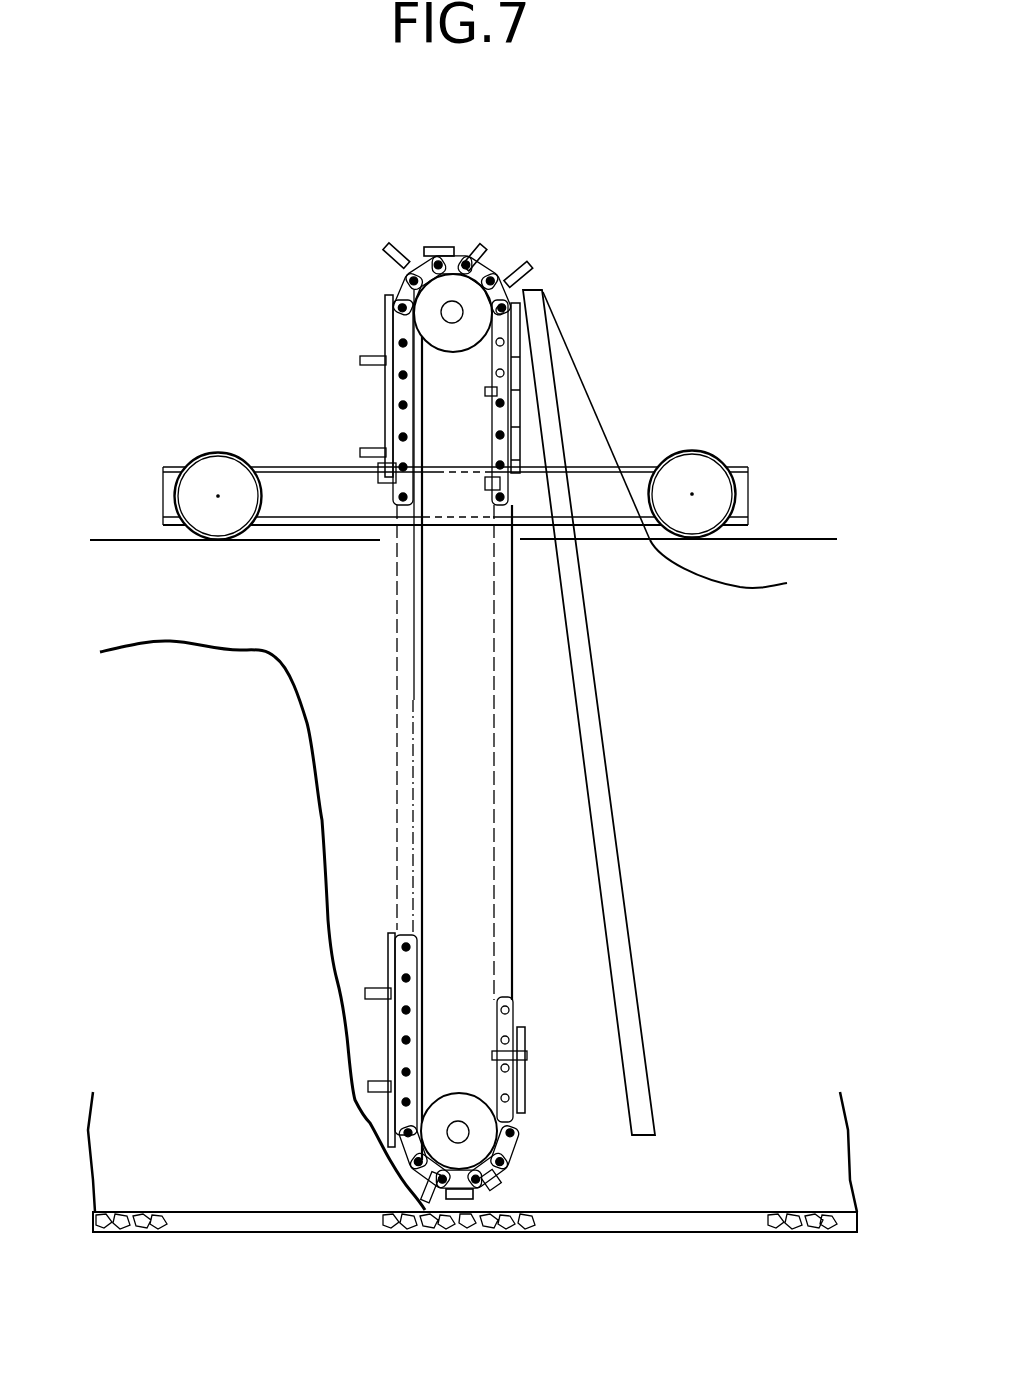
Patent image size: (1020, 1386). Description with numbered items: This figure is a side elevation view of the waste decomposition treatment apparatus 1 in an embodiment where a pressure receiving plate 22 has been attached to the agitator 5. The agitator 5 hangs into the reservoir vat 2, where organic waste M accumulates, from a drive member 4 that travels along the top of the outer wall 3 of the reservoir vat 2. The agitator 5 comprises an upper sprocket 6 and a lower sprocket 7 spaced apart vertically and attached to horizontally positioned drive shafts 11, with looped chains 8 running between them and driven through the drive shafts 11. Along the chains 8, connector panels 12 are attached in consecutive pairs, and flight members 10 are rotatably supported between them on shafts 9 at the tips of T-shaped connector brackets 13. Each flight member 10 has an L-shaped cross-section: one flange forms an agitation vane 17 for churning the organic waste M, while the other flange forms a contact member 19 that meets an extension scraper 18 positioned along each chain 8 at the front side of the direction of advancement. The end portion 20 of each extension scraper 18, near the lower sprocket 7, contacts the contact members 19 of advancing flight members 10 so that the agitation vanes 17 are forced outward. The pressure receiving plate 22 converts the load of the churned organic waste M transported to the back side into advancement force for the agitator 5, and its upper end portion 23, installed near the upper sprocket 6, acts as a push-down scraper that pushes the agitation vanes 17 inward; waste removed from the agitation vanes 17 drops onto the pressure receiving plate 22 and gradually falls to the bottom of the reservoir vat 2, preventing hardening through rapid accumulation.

The waste decomposition treatment apparatus 1 is at (238, 1233).
The reservoir vat 2 is at (373, 1232).
The outer wall 3 is at (147, 560).
The drive member 4 is at (180, 465).
The agitator 5 is at (440, 248).
The upper sprocket 6 is at (467, 287).
The lower sprocket 7 is at (453, 1090).
The chain 8 is at (390, 418).
The shaft 9 is at (390, 475).
The flight member 10 is at (495, 392).
The drive shaft 11 is at (385, 305).
The connector panel 12 is at (517, 332).
The connector bracket 13 is at (422, 455).
The agitation vane 17 is at (362, 452).
The extension scraper 18 is at (430, 962).
The contact member 19 is at (487, 484).
The end portion of extension scraper 20 is at (387, 1120).
The pressure receiving plate 22 is at (648, 1045).
The upper end portion of pressure receiving plate 23 is at (540, 285).
The organic waste M is at (733, 603).